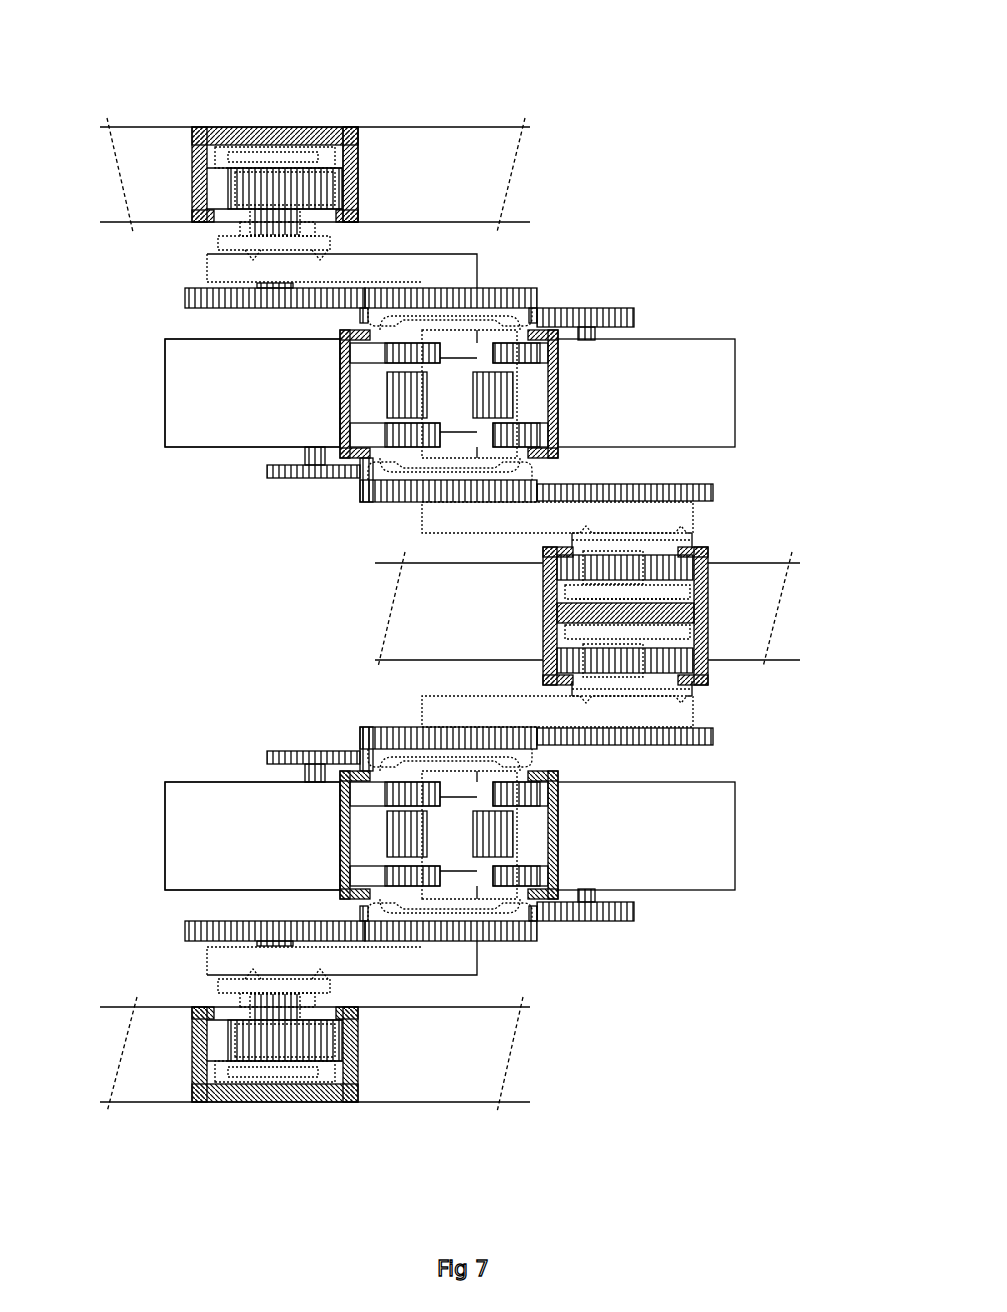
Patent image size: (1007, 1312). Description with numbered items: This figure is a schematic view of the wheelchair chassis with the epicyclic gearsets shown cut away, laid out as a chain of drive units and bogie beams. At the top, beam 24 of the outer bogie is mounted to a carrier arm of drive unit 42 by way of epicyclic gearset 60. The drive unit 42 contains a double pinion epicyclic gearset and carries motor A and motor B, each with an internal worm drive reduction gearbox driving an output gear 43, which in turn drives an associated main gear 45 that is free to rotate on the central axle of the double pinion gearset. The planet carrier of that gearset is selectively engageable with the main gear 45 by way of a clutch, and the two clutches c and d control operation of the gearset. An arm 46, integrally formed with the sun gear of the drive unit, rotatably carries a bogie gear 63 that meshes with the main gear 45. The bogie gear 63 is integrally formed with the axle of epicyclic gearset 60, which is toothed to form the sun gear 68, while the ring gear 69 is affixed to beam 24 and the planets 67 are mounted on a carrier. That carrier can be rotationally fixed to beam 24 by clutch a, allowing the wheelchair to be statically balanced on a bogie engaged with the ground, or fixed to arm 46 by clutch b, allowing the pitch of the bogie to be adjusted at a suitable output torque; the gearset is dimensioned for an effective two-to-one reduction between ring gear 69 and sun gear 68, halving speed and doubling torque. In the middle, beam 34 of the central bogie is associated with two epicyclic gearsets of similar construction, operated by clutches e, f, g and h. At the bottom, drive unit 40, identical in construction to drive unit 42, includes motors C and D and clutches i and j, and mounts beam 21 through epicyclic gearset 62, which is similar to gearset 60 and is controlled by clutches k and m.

The beam 21 is at (431, 1061).
The curved beam 24 is at (440, 179).
The curved beam 34 is at (500, 611).
The drive unit 40 is at (165, 790).
The drive unit 42 is at (165, 445).
The output gear 43 is at (625, 308).
The main gear 45 is at (483, 287).
The arm 46 is at (391, 258).
The epicyclic gearset 60 is at (270, 127).
The epicyclic gearset 62 is at (303, 1103).
The bogie gear 63 is at (193, 305).
The planets 67 is at (242, 183).
The sun gear 68 is at (277, 217).
The ring gear 69 is at (350, 175).
The clutch a is at (238, 152).
The clutch b is at (237, 238).
The clutch c is at (503, 313).
The clutch d is at (402, 468).
The clutch e is at (670, 542).
The clutch f is at (672, 588).
The clutch g is at (672, 640).
The clutch h is at (680, 687).
The clutch i is at (372, 750).
The clutch j is at (520, 913).
The clutch k is at (237, 990).
The clutch m is at (257, 1082).
The motor A is at (225, 394).
The motor B is at (632, 396).
The motor C is at (234, 837).
The motor D is at (629, 837).